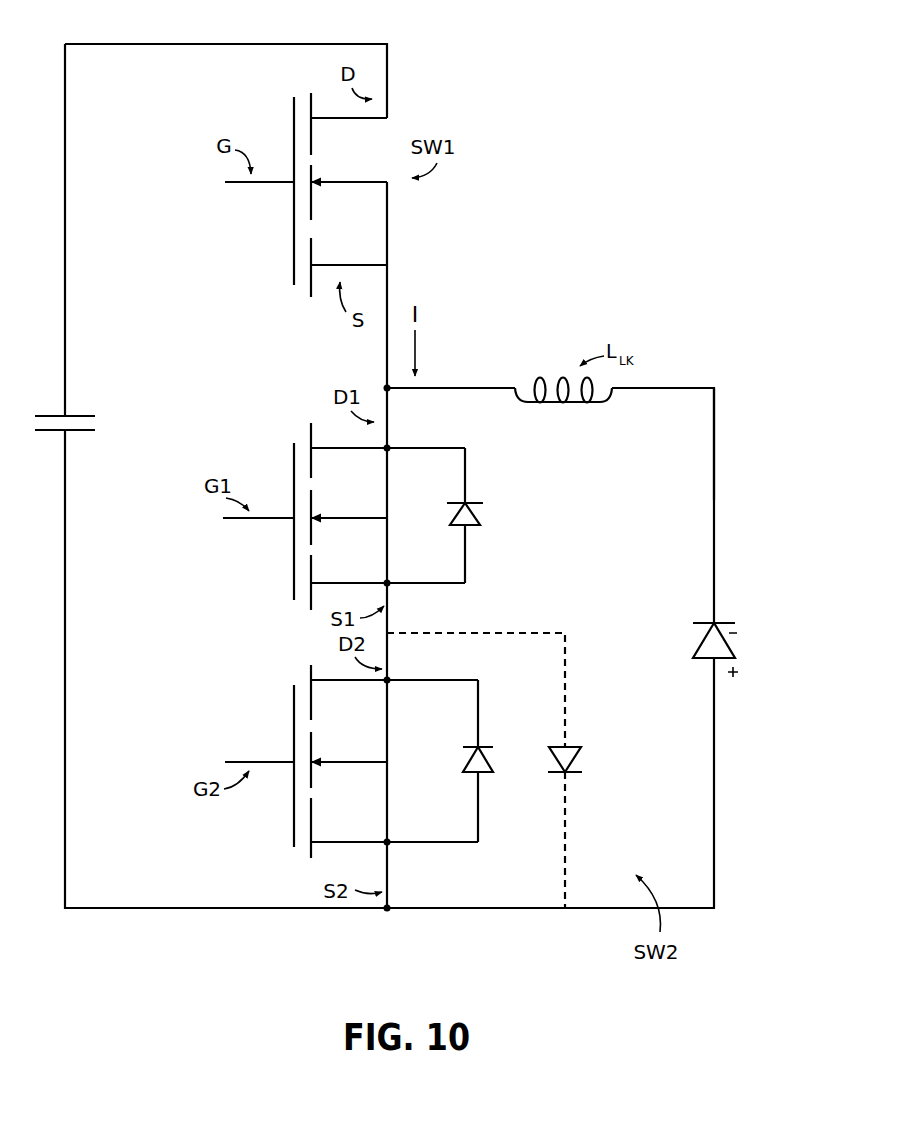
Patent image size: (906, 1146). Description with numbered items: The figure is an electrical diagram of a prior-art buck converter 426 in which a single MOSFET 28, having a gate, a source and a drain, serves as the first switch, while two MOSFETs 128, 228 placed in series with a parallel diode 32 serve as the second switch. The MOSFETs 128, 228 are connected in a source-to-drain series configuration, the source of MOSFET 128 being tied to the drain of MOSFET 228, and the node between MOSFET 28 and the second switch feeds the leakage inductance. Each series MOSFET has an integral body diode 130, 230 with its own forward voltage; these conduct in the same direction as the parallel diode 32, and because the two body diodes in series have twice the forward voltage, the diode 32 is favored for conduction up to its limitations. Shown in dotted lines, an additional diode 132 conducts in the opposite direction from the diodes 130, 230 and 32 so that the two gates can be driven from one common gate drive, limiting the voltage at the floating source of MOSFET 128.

The MOSFET 28 is at (222, 196).
The MOSFET 128 is at (261, 454).
The MOSFET 228 is at (261, 841).
The body diode 130 is at (489, 512).
The body diode 230 is at (497, 777).
The additional diode 132 is at (590, 758).
The diode 32 is at (751, 643).
The buck converter 426 is at (749, 370).